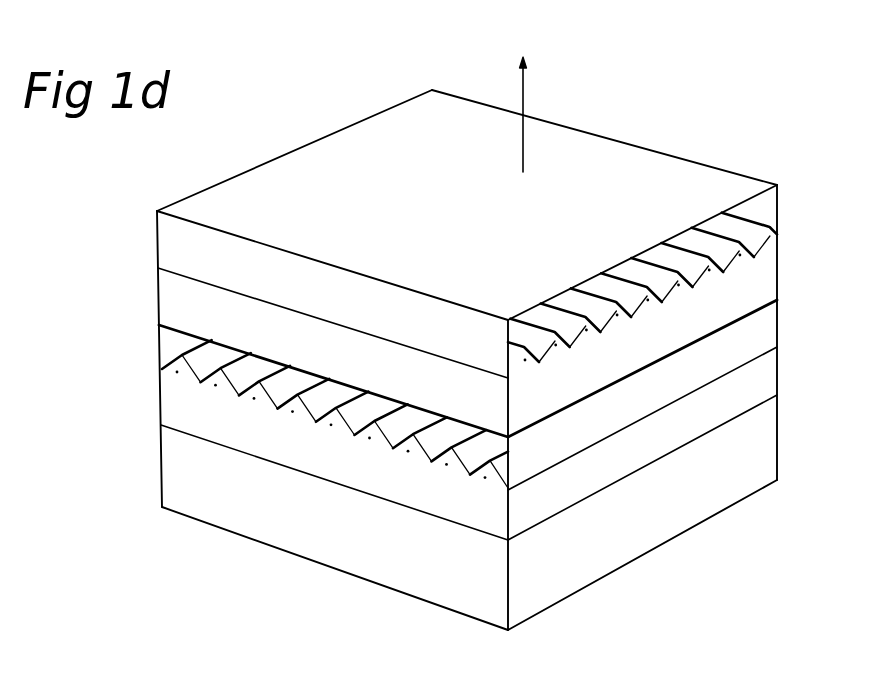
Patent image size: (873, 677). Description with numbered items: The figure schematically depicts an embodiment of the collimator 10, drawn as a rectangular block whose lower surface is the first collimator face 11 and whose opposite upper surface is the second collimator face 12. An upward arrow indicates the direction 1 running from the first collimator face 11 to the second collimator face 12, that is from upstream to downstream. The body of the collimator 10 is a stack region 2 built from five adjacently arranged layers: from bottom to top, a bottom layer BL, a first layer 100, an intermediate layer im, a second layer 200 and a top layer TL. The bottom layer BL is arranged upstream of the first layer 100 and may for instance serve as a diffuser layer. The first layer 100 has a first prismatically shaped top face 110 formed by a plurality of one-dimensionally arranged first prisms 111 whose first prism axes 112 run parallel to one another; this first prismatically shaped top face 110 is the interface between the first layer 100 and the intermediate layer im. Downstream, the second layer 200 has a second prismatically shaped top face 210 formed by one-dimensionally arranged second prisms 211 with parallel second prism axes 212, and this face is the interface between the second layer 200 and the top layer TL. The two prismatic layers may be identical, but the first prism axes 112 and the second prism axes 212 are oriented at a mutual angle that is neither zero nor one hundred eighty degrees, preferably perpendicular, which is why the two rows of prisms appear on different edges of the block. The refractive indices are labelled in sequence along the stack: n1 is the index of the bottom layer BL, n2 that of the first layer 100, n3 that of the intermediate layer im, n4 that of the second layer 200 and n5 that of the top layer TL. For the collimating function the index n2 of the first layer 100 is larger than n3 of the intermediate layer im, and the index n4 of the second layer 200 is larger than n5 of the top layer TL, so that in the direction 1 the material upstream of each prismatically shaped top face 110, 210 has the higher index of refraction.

The direction 1 is at (525, 97).
The stack region 2 is at (388, 90).
The collimator 10 is at (295, 125).
The first collimator face 11 is at (406, 596).
The second collimator face 12 is at (643, 163).
The first layer 100 is at (478, 587).
The first prismatically shaped top face 110 is at (205, 372).
The first prisms 111 is at (297, 417).
The first prism axes 112 is at (408, 440).
The second layer 200 is at (757, 283).
The second prismatically shaped top face 210 is at (764, 236).
The second prisms 211 is at (630, 312).
The second prism axes 212 is at (725, 264).
The top layer TL is at (230, 200).
The bottom layer BL is at (605, 548).
The intermediate layer im is at (172, 337).
The index of refraction of the bottom layer n1 is at (197, 485).
The index of refraction of the first layer n2 is at (763, 385).
The index of refraction of the intermediate layer n3 is at (763, 335).
The index of refraction of the second layer n4 is at (173, 296).
The index of refraction of the top layer n5 is at (173, 243).